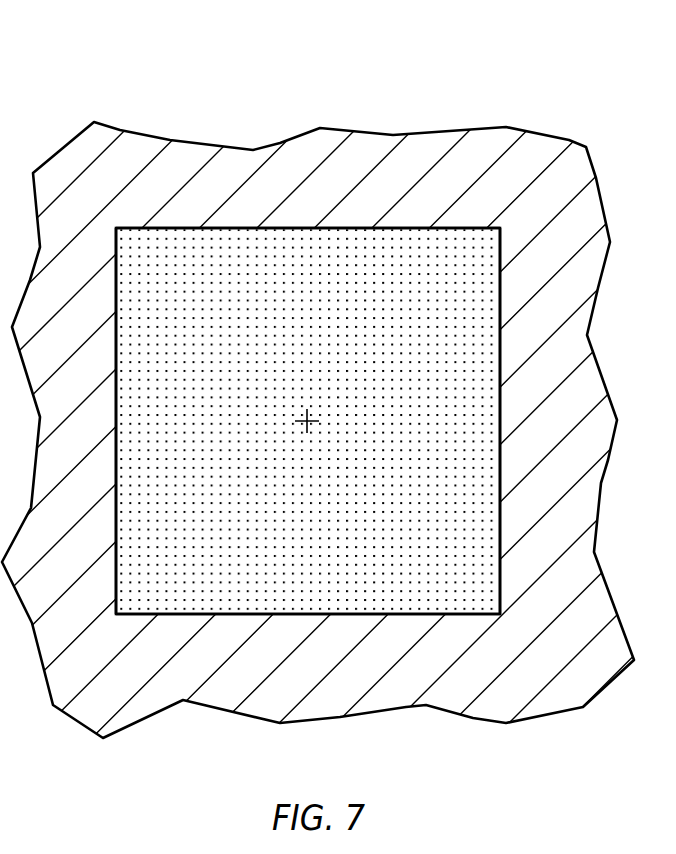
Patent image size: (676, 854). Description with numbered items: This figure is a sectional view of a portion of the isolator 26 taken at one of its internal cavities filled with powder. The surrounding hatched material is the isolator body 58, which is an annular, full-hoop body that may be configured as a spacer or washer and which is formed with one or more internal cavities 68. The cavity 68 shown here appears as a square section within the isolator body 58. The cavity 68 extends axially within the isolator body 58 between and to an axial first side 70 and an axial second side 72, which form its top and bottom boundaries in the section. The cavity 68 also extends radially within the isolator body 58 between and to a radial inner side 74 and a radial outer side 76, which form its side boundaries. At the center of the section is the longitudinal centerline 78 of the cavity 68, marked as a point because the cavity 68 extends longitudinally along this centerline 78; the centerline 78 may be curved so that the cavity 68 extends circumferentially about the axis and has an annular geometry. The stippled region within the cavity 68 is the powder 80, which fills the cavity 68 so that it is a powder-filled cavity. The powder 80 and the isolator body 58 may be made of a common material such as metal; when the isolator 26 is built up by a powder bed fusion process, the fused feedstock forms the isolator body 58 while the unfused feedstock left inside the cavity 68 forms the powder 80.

The isolator 26 is at (338, 427).
The isolator body 58 is at (558, 126).
The internal cavity 68 is at (339, 404).
The axial first side 70 is at (255, 228).
The axial second side 72 is at (283, 614).
The radial inner side 74 is at (500, 355).
The radial outer side 76 is at (116, 377).
The longitudinal centerline 78 is at (308, 425).
The powder 80 is at (225, 491).